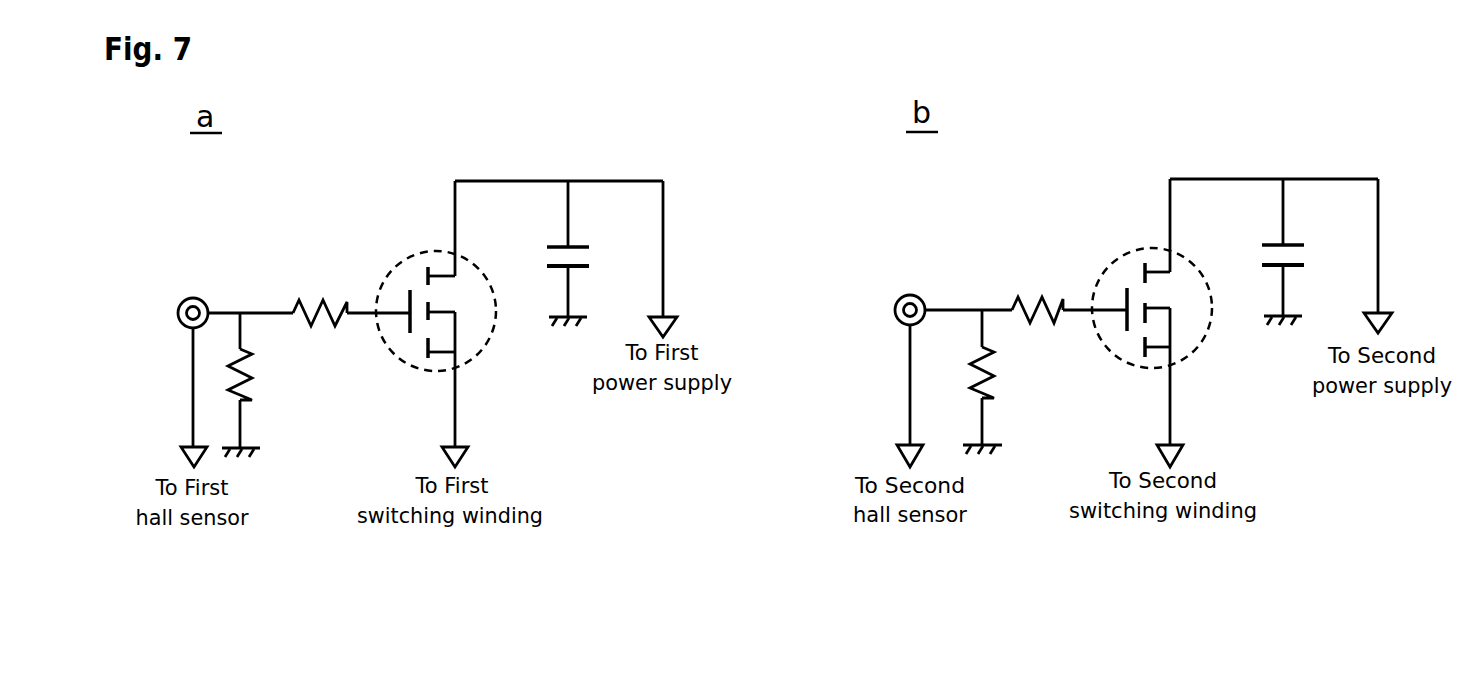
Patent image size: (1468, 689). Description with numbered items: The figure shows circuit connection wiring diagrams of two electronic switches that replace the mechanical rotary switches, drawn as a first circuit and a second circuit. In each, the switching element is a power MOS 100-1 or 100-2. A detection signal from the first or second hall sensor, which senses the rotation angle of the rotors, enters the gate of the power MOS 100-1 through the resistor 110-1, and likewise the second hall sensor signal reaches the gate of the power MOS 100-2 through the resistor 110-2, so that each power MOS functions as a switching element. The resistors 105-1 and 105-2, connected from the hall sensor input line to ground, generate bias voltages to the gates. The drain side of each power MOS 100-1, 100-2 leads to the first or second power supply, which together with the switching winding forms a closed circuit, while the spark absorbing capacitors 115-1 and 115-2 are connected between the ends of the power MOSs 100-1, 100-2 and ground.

The power MOS 100-1 is at (415, 256).
The resistor 105-1 is at (254, 372).
The resistor 110-1 is at (323, 293).
The spark absorbing capacitor 115-1 is at (585, 228).
The power MOS 100-2 is at (1131, 254).
The resistor 105-2 is at (997, 372).
The resistor 110-2 is at (1040, 292).
The spark absorbing capacitor 115-2 is at (1298, 227).